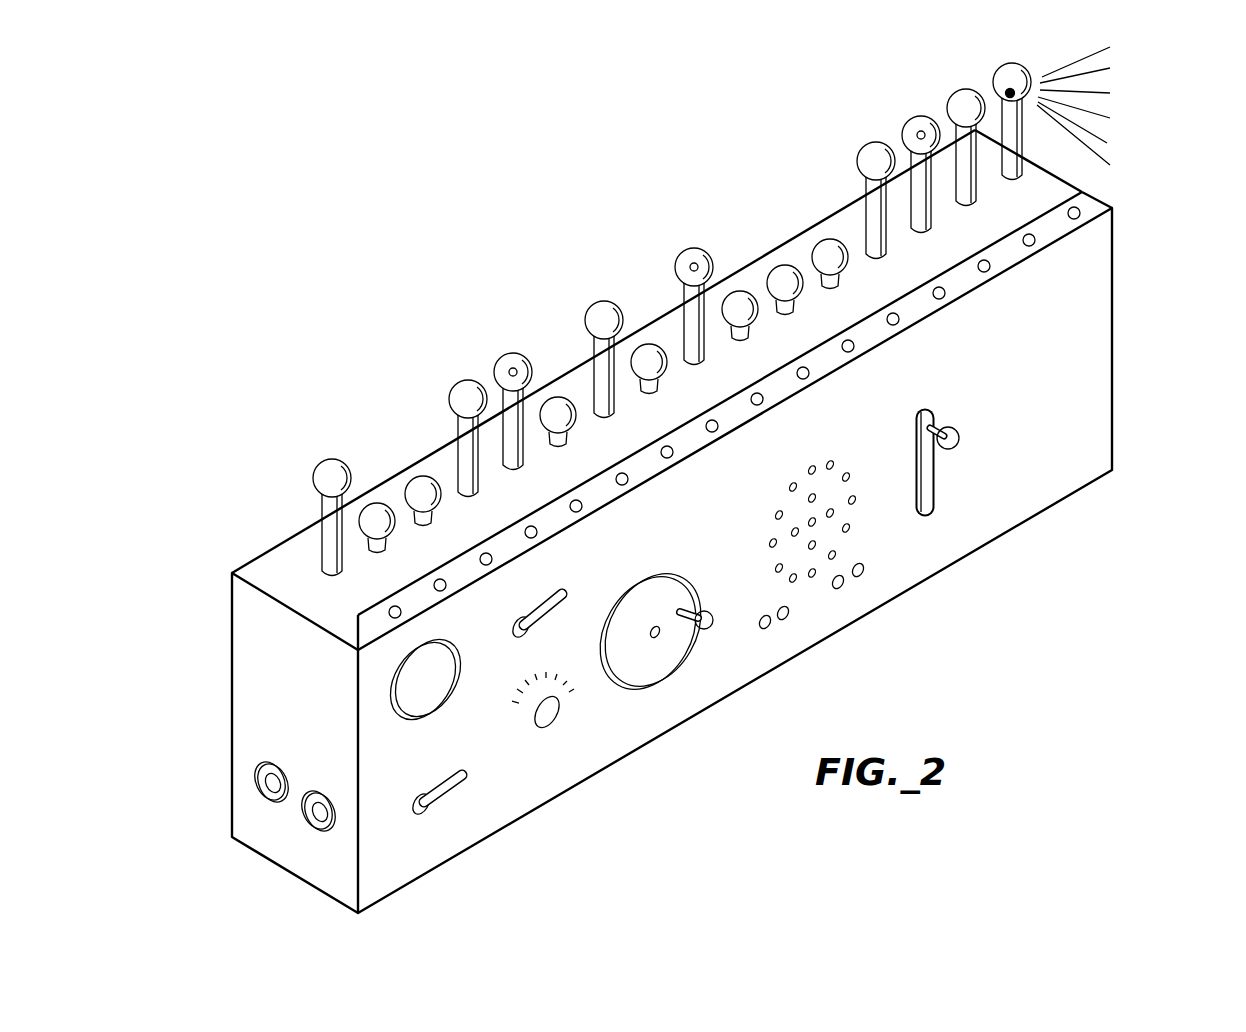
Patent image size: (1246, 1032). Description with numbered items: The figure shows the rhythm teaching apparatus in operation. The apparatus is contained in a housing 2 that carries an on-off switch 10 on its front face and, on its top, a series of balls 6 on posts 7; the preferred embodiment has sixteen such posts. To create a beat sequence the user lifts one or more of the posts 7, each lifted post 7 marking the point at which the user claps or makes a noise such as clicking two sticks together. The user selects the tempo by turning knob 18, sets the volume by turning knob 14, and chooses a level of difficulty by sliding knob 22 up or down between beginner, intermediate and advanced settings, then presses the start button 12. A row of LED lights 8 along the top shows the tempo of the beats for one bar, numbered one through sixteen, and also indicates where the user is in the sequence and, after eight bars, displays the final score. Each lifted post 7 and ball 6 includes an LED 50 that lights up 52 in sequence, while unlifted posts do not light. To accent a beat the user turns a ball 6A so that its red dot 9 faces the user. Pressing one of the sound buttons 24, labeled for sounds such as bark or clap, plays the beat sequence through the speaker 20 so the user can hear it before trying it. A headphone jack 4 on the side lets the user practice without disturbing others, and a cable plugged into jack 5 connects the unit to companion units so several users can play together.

The housing 2 is at (243, 667).
The headphone jack 4 is at (310, 812).
The jack 5 is at (262, 788).
The balls 6 is at (615, 332).
The ball 6A is at (694, 277).
The posts 7 is at (322, 545).
The LED lights 8 is at (945, 291).
The red dot 9 is at (696, 266).
The on-off switch 10 is at (468, 790).
The start button 12 is at (448, 693).
The knob 14 is at (553, 712).
The knob 18 is at (677, 653).
The speaker 20 is at (813, 543).
The knob 22 is at (923, 483).
The sound buttons 24 is at (793, 603).
The LED 50 is at (1010, 93).
The lighting up 52 is at (1097, 130).